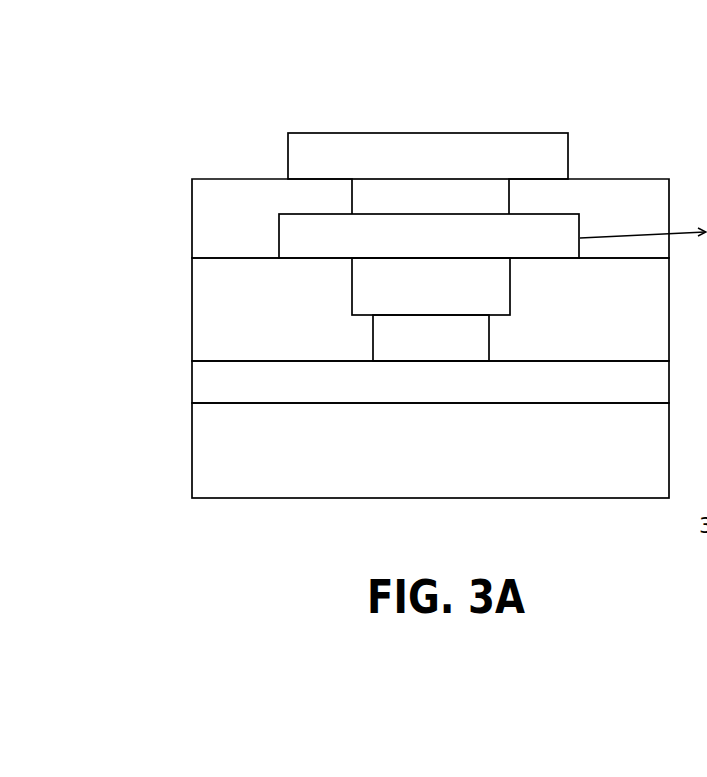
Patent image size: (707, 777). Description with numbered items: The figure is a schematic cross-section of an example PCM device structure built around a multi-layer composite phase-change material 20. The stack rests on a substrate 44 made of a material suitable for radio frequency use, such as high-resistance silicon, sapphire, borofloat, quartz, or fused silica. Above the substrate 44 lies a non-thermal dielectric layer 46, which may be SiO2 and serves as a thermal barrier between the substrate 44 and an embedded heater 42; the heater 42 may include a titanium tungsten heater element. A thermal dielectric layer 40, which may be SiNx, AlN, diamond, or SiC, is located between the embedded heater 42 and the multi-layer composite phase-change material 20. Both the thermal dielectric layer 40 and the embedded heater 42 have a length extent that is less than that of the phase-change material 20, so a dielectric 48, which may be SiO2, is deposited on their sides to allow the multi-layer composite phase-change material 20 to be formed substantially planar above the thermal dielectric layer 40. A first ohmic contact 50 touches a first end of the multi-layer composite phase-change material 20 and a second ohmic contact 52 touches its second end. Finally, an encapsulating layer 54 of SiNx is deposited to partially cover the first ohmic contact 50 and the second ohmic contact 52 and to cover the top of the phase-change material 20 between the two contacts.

The multi-layer composite phase-change material 20 is at (418, 218).
The thermal dielectric layer 40 is at (362, 268).
The embedded heater 42 is at (388, 331).
The substrate 44 is at (265, 458).
The non-thermal dielectric layer 46 is at (319, 385).
The dielectric 48 is at (651, 338).
The first ohmic contact 50 is at (262, 178).
The second ohmic contact 52 is at (597, 187).
The encapsulating layer 54 is at (425, 140).